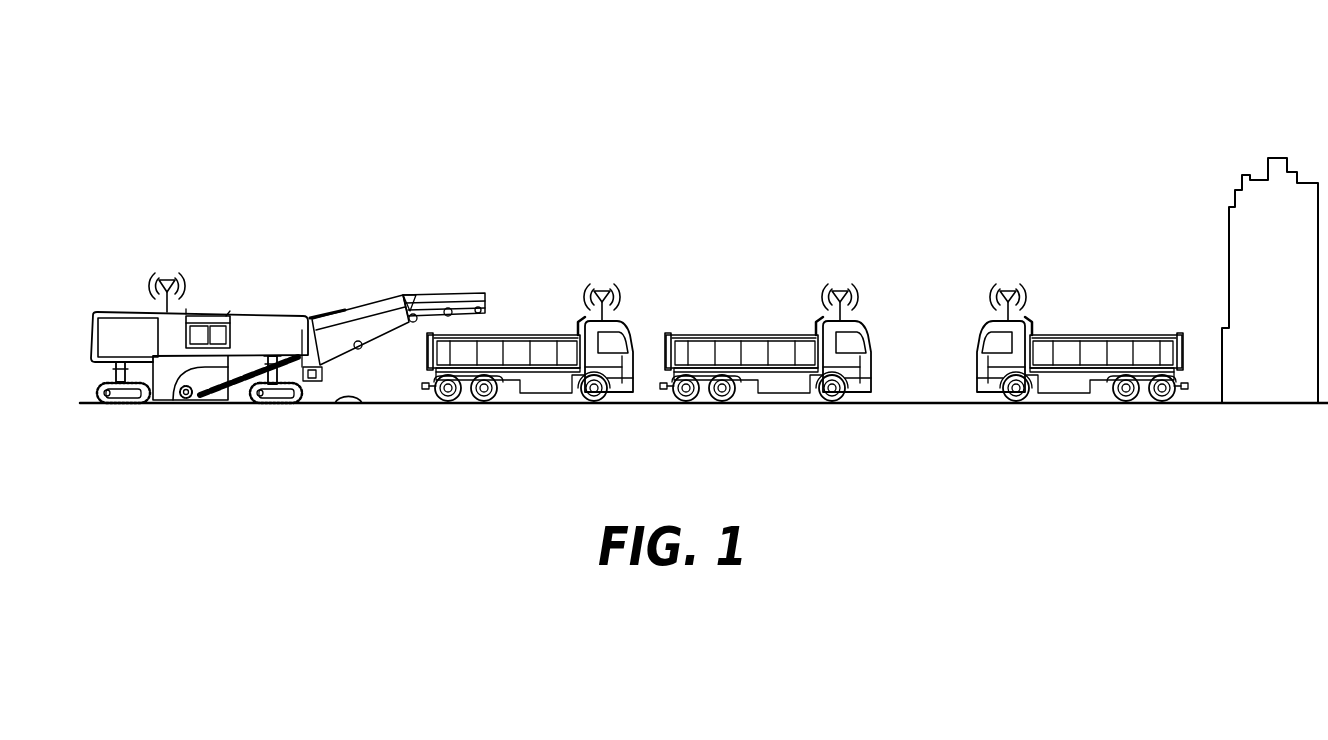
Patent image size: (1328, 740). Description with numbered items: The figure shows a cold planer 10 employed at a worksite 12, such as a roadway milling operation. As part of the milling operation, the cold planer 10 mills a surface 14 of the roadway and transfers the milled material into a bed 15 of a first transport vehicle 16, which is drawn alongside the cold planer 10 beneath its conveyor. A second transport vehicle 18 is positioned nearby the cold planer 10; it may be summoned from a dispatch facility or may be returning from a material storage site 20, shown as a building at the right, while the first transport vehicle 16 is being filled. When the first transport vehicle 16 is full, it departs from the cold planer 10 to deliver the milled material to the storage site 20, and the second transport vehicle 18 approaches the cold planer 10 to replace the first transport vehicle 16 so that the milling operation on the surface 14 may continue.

The cold planer 10 is at (252, 312).
The worksite 12 is at (758, 135).
The surface 14 is at (362, 404).
The bed 15 is at (530, 335).
The first transport vehicle 16 is at (550, 328).
The second transport vehicle 18 is at (865, 331).
The material storage site 20 is at (1284, 300).